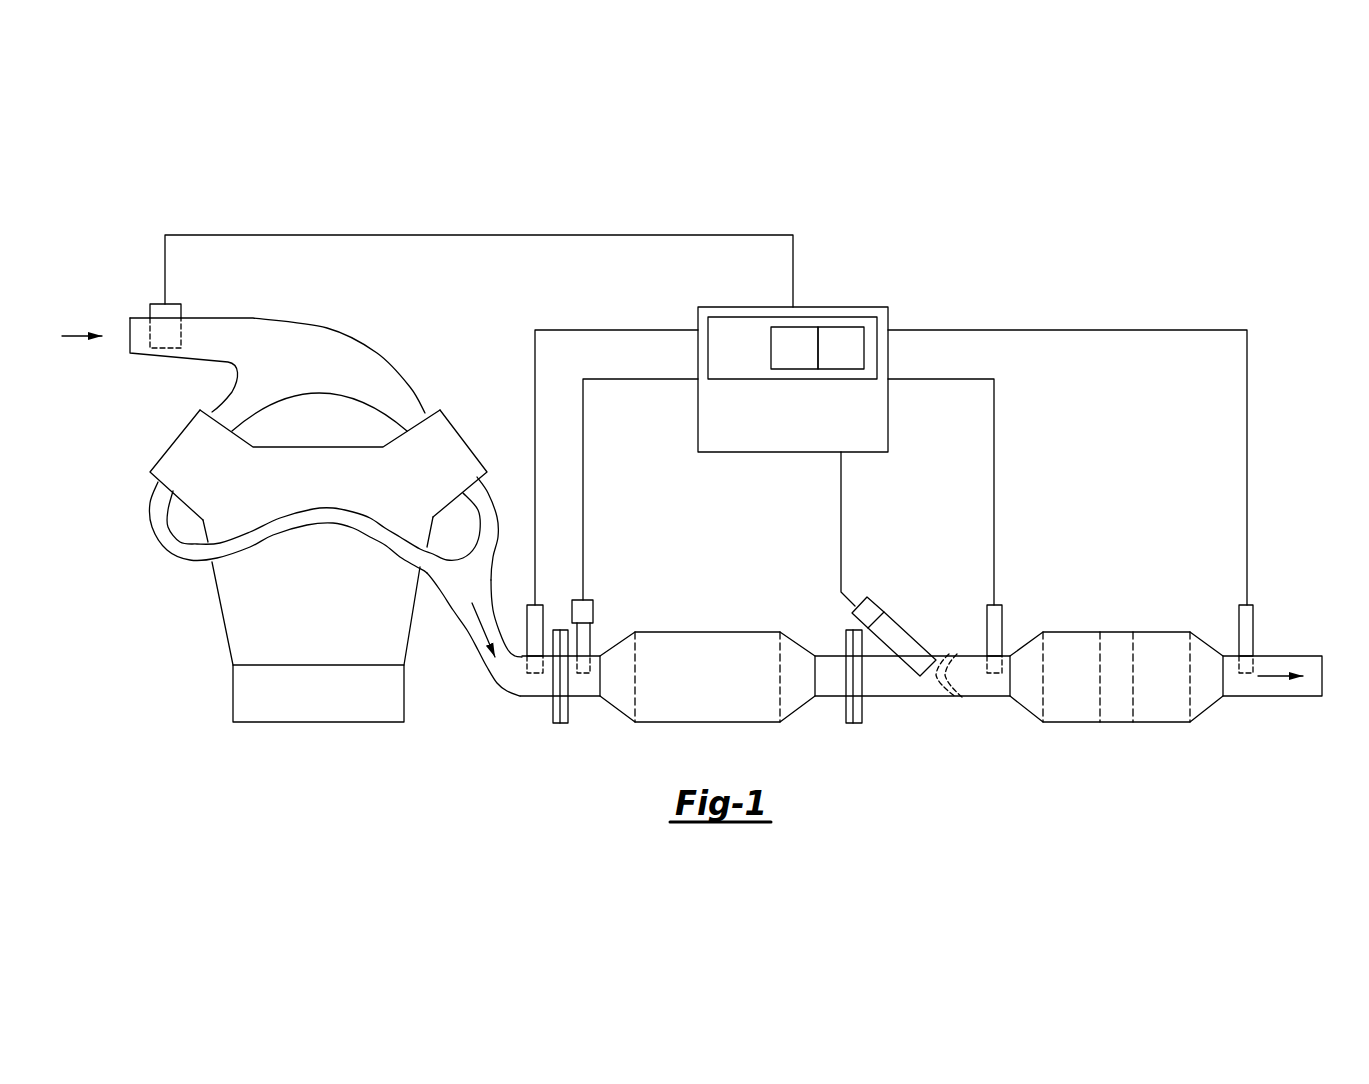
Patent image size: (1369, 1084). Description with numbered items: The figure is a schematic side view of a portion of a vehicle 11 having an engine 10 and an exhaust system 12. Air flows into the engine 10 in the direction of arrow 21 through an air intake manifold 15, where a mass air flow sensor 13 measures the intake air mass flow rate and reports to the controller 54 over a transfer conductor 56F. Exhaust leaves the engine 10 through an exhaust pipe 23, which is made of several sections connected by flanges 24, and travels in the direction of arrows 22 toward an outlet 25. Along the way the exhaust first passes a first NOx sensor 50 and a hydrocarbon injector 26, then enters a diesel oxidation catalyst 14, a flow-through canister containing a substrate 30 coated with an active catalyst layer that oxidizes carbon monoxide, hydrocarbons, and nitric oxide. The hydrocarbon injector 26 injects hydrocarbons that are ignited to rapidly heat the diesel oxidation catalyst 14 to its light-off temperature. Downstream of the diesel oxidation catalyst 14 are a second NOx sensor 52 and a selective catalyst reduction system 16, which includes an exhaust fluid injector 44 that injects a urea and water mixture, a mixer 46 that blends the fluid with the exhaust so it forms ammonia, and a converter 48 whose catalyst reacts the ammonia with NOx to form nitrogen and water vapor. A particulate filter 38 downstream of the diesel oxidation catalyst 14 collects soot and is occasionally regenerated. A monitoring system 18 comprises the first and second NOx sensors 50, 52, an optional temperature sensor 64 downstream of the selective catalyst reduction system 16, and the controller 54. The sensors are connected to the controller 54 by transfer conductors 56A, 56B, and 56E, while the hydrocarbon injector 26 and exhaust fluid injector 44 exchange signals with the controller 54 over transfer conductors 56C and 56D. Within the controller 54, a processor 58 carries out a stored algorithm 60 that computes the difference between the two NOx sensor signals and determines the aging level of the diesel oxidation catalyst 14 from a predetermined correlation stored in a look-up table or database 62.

The engine 10 is at (156, 630).
The vehicle 11 is at (874, 229).
The exhaust system 12 is at (476, 331).
The mass air flow (MAF) sensor 13 is at (150, 305).
The diesel oxidation catalyst (DOC) 14 is at (707, 635).
The air intake manifold 15 is at (258, 318).
The selective catalyst reduction (SCR) system 16 is at (877, 639).
The monitoring system 18 is at (744, 385).
The arrow (intake air flow direction) 21 is at (80, 334).
The arrows (exhaust flow) 22 is at (482, 632).
The exhaust pipe 23 is at (533, 698).
The flanges 24 is at (560, 724).
The outlet 25 is at (1323, 676).
The hydrocarbon injector 26 is at (591, 600).
The substrate 30 is at (718, 686).
The particulate filter 38 is at (1170, 686).
The exhaust fluid injector 44 is at (853, 612).
The mixer 46 is at (957, 698).
The converter 48 is at (1083, 686).
The first NOx sensor 50 is at (545, 607).
The second NOx sensor 52 is at (1003, 607).
The controller 54 is at (793, 379).
The transfer conductor 56A is at (610, 330).
The transfer conductor 56B is at (994, 412).
The transfer conductor 56C is at (627, 381).
The transfer conductor 56D is at (841, 500).
The transfer conductor 56E is at (1247, 362).
The transfer conductor 56F is at (481, 234).
The processor 58 is at (753, 363).
The stored algorithm 60 is at (804, 363).
The look-up table or database 62 is at (851, 363).
The temperature sensor 64 is at (1254, 607).